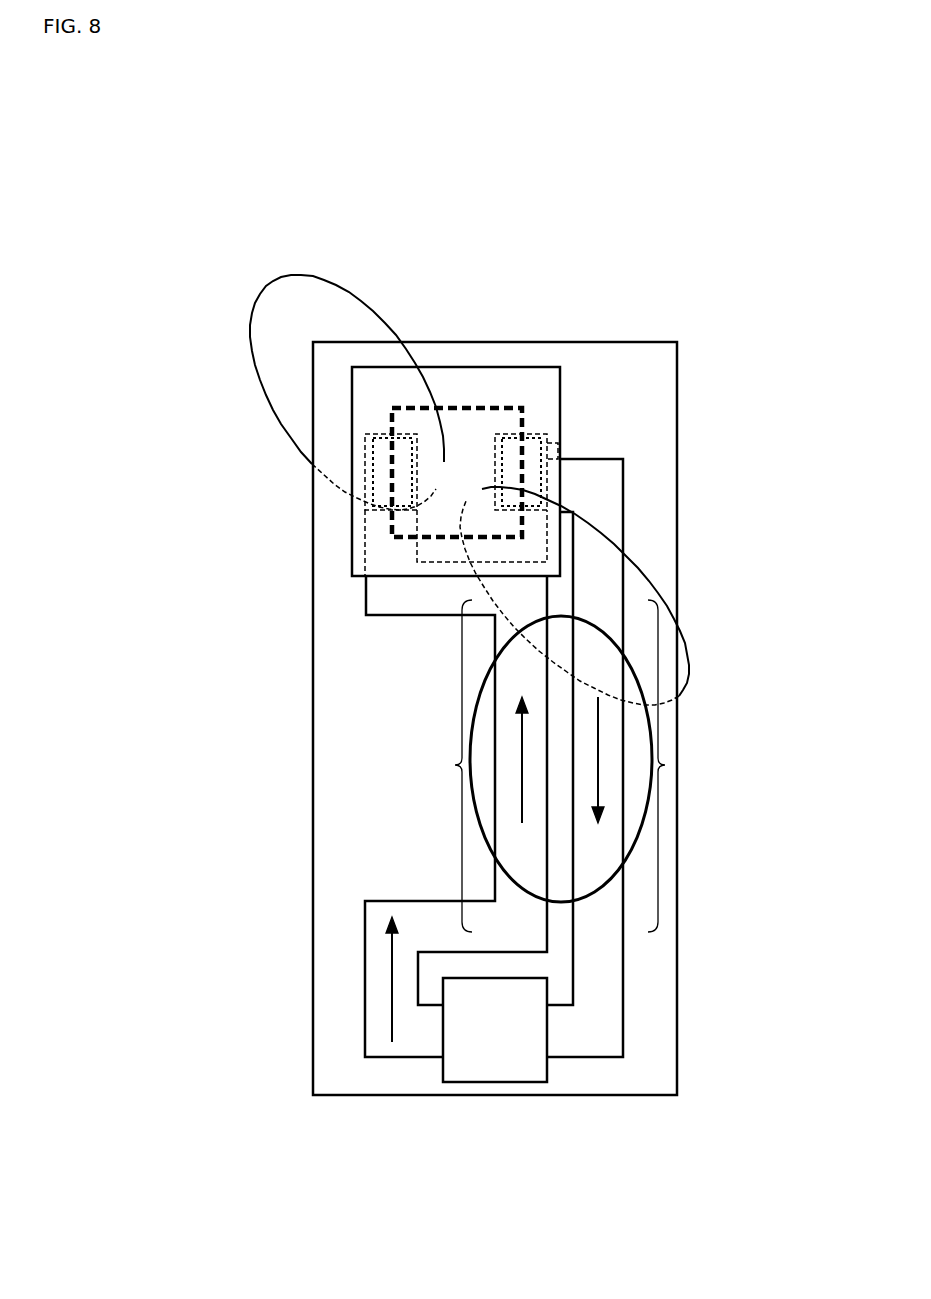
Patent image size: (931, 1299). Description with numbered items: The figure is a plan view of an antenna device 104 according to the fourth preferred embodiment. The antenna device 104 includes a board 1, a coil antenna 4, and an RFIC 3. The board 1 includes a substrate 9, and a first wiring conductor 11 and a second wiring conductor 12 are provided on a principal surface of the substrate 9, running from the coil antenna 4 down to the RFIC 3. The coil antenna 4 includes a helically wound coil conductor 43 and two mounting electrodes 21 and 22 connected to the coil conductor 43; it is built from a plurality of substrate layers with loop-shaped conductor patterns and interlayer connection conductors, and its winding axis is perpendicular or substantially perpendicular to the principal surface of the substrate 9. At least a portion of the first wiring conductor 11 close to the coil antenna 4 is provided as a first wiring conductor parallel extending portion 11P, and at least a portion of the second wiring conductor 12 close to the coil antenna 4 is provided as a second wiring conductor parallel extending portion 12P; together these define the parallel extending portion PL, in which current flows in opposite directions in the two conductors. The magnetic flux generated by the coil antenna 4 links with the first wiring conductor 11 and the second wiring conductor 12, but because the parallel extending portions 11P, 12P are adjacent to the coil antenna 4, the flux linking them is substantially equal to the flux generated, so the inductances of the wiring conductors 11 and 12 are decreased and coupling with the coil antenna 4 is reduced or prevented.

The board 1 is at (691, 378).
The antenna device 104 is at (618, 221).
The substrate 9 is at (665, 358).
The coil antenna 4 is at (521, 367).
The coil conductor 43 is at (457, 405).
The mounting electrode 21 is at (373, 445).
The mounting electrode 22 is at (541, 452).
The first wiring conductor 11 is at (388, 599).
The second wiring conductor 12 is at (612, 512).
The first wiring conductor parallel extending portion 11P is at (455, 765).
The second wiring conductor parallel extending portion 12P is at (665, 767).
The parallel extending portion PL is at (628, 843).
The RFIC 3 is at (497, 1057).